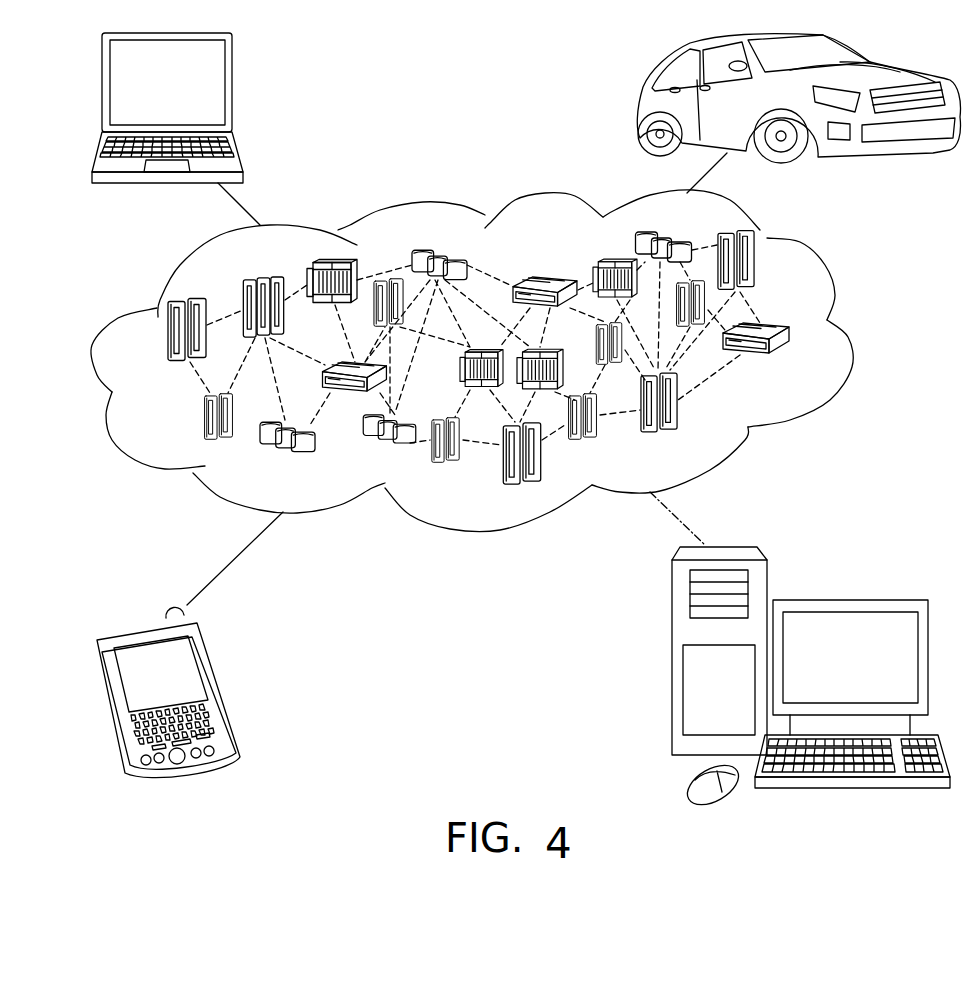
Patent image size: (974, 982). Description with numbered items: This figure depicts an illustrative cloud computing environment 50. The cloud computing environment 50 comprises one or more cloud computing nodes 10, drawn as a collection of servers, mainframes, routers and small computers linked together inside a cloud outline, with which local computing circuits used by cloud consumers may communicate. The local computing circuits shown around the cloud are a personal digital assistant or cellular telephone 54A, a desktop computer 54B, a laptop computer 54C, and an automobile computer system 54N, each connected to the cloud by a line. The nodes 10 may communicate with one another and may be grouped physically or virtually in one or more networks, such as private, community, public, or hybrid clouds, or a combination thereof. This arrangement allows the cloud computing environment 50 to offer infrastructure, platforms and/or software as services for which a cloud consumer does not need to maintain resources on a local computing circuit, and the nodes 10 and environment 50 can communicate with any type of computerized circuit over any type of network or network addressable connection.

The cloud computing node 10 is at (806, 357).
The cloud computing environment 50 is at (848, 337).
The personal digital assistant or cellular telephone 54A is at (227, 687).
The desktop computer 54B is at (847, 600).
The laptop computer 54C is at (232, 90).
The automobile computer system 54N is at (641, 101).